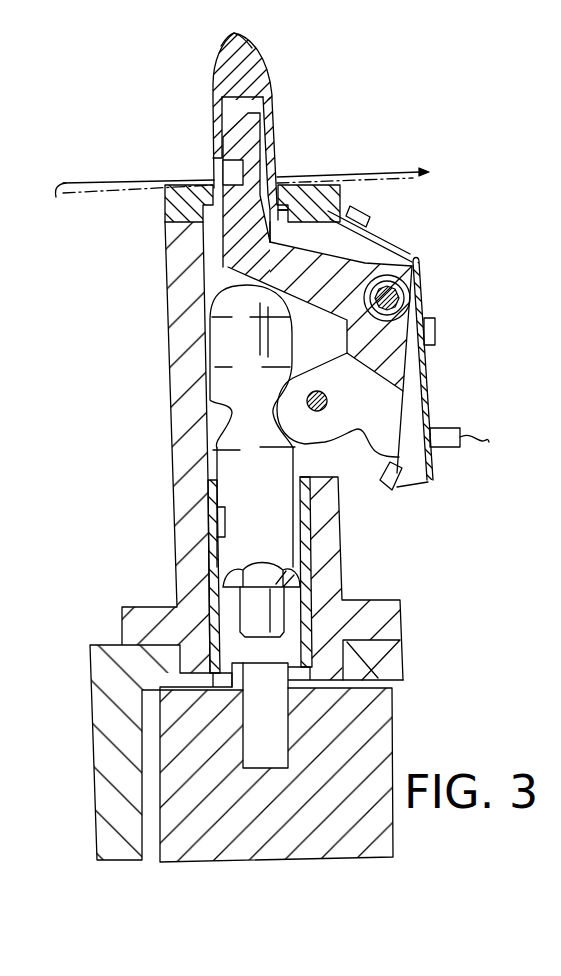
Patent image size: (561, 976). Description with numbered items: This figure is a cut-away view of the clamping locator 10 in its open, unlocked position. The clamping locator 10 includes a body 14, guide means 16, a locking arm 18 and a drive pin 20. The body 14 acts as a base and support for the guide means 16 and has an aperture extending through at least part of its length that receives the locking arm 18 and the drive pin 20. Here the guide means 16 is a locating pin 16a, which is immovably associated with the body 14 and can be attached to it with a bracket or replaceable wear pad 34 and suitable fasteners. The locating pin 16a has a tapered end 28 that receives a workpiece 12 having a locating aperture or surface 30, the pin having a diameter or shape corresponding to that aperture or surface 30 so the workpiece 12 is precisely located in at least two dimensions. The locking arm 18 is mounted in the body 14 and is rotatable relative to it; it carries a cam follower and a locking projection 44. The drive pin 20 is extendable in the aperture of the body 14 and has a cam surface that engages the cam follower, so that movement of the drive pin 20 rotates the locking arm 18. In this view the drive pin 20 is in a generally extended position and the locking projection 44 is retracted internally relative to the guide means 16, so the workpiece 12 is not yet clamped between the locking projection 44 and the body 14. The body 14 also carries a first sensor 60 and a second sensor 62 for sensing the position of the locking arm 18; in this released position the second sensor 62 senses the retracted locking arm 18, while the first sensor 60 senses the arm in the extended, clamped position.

The clamping locator 10 is at (100, 118).
The workpiece 12 is at (405, 180).
The body 14 is at (175, 330).
The guide means 16 is at (330, 45).
The locating pin 16a is at (263, 77).
The locking arm 18 is at (383, 243).
The drive pin 20 is at (203, 393).
The tapered end 28 is at (236, 33).
The locating aperture or surface 30 is at (278, 177).
The bracket or replaceable wear pad 34 is at (322, 200).
The locking projection 44 is at (257, 123).
The first sensor 60 is at (453, 447).
The second sensor 62 is at (383, 492).